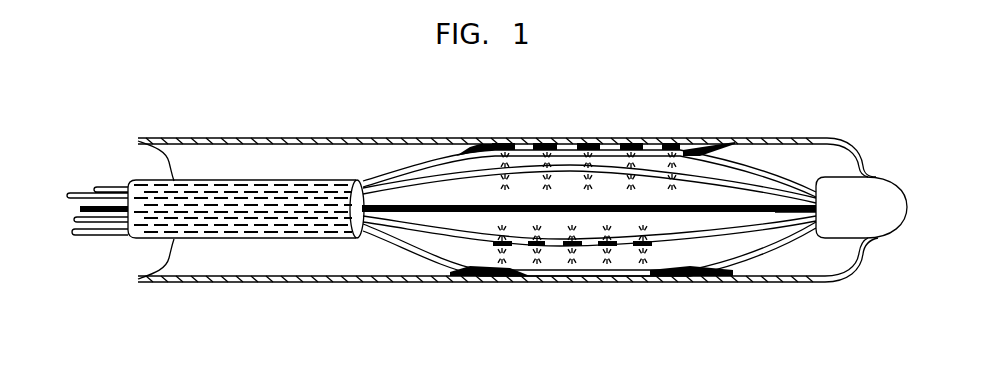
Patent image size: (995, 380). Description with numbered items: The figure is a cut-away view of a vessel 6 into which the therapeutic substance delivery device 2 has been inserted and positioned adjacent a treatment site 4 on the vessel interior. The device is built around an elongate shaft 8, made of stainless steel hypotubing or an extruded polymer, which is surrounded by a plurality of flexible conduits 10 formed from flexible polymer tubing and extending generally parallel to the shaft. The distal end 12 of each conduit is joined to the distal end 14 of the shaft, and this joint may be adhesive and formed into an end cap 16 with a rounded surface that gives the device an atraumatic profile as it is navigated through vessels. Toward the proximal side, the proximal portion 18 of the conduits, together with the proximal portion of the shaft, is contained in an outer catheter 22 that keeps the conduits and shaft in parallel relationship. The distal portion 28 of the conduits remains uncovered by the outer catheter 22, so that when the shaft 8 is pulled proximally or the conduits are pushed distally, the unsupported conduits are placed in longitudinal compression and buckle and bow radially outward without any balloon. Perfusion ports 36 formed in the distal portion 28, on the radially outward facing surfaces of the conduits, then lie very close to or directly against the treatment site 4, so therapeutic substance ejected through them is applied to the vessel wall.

The therapeutic substance delivery device 2 is at (378, 160).
The treatment site 4 is at (695, 133).
The vessel 6 is at (767, 128).
The elongate shaft 8 is at (737, 212).
The flexible conduits 10 is at (463, 178).
The distal end of conduit 12 is at (773, 170).
The distal end of shaft 14 is at (790, 212).
The end cap 16 is at (845, 190).
The proximal portion of the conduits 18 is at (85, 196).
The outer catheter 22 is at (335, 240).
The distal portion of the conduits 28 is at (525, 140).
The perfusion ports 36 is at (620, 136).